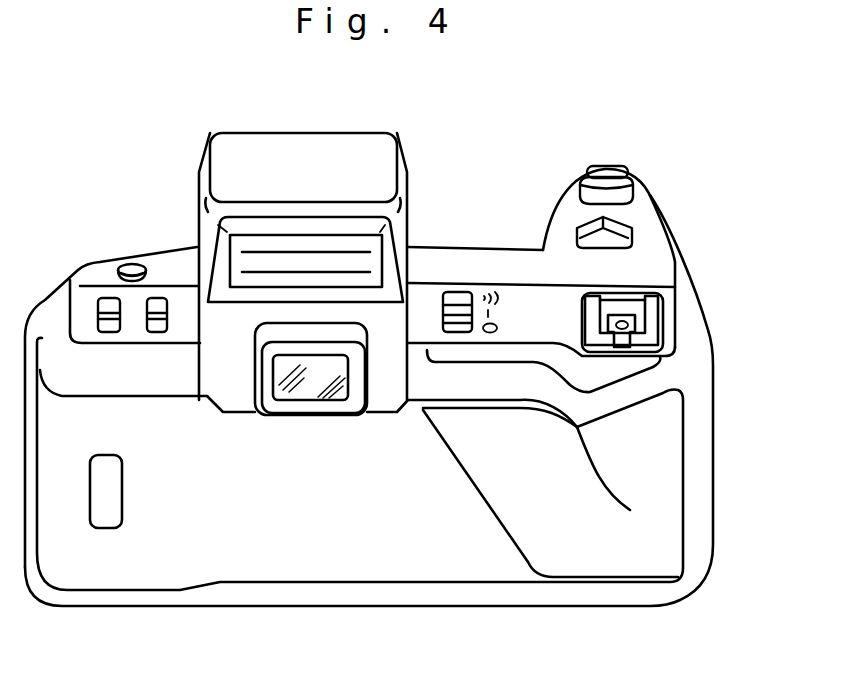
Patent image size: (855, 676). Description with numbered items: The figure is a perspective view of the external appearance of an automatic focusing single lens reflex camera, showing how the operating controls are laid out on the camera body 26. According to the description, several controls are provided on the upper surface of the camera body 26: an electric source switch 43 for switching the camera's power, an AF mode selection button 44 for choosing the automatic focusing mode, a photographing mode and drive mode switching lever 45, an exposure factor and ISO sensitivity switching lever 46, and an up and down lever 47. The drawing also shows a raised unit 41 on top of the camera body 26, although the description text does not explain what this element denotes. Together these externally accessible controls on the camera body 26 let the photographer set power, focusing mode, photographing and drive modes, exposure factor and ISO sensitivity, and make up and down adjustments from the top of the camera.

The camera body 26 is at (680, 350).
The flash unit 41 is at (318, 243).
The electric source switch 43 is at (457, 293).
The AF mode selection button 44 is at (128, 266).
The photographing mode and drive mode switching lever 45 is at (152, 297).
The exposure factor and ISO sensitivity switching lever 46 is at (100, 298).
The up and down lever 47 is at (620, 226).